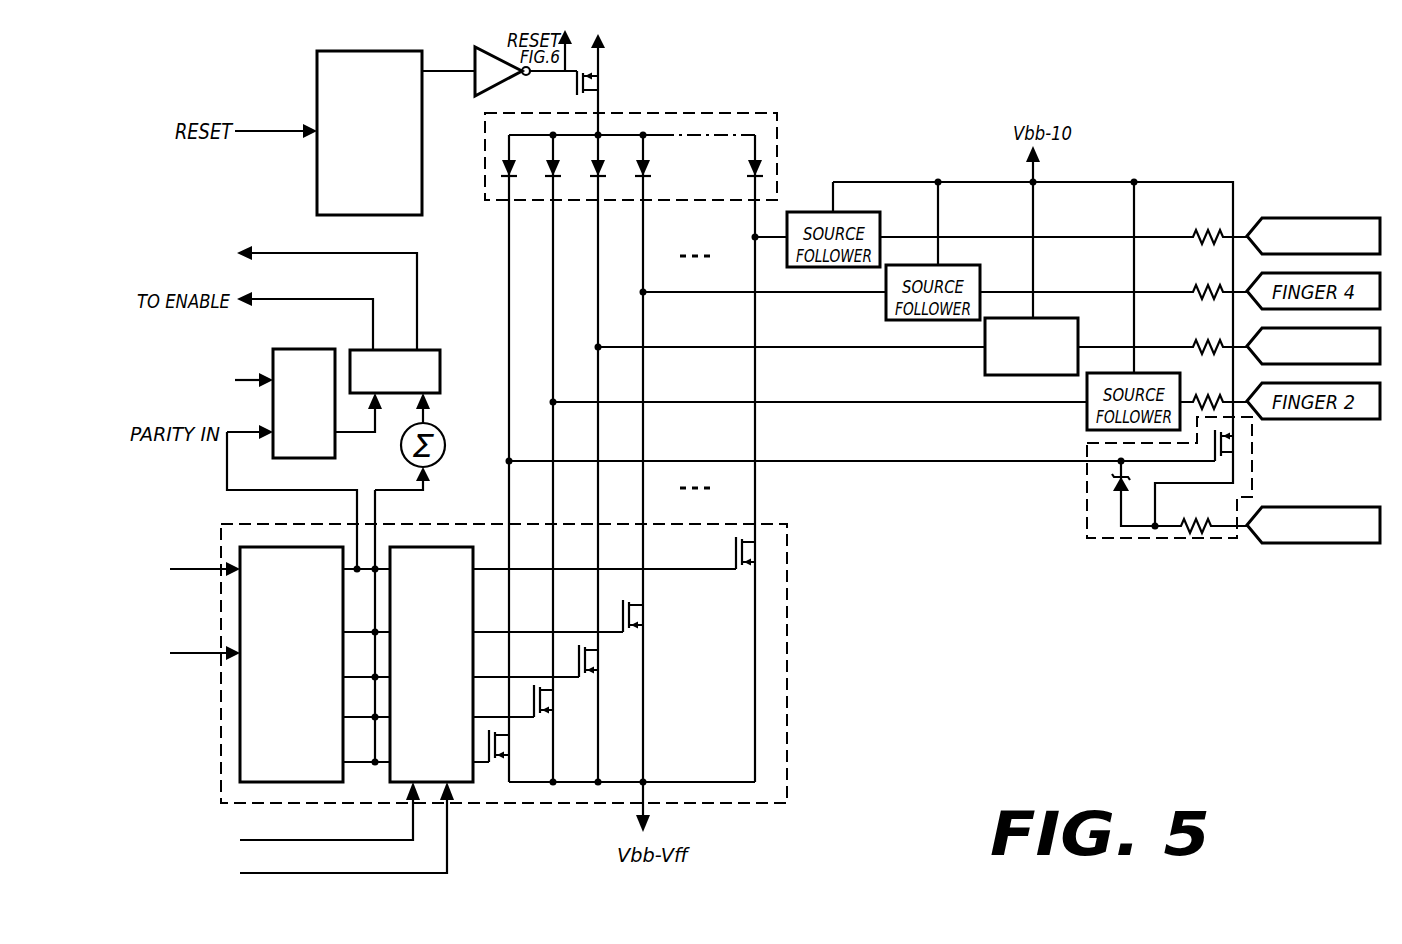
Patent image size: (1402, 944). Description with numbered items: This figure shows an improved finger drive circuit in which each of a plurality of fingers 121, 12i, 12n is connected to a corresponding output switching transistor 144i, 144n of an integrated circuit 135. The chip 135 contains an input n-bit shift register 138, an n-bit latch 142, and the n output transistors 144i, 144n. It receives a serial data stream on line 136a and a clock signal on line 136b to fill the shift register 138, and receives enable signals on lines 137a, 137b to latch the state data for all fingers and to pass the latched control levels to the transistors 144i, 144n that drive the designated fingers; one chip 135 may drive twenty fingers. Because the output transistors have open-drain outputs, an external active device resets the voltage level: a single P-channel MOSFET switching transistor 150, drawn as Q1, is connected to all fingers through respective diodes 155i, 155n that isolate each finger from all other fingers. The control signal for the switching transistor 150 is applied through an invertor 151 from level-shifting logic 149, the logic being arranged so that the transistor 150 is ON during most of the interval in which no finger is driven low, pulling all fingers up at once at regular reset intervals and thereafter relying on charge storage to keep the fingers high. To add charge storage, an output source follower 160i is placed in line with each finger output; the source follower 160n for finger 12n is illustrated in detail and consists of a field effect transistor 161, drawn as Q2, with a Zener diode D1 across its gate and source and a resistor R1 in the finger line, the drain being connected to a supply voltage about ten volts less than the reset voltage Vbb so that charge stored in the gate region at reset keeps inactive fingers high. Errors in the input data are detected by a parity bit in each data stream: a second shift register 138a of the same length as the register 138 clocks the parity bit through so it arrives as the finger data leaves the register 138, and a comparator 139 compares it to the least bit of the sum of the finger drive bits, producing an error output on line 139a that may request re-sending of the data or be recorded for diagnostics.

The level-shifting logic 149 is at (386, 172).
The invertor 151 is at (498, 78).
The switching transistor 150 is at (622, 83).
The reset transistor Q1 is at (601, 88).
The diode 155n is at (502, 178).
The diode 155i is at (610, 180).
The error output line 139a is at (418, 280).
The comparator 139 is at (425, 350).
The second shift register 138a is at (322, 414).
The clock signal line 136b is at (245, 378).
The serial data line 136a is at (190, 566).
The n-bit shift register 138 is at (305, 604).
The n-bit latch 142 is at (442, 604).
The integrated circuit 135 is at (690, 557).
The output switching transistor 144i is at (612, 661).
The output switching transistor 144n is at (503, 768).
The enable signal line 137a is at (332, 838).
The enable signal line 137b is at (332, 871).
The finger 121 is at (1300, 218).
The finger 12i is at (1250, 338).
The finger 12n is at (1295, 507).
The output source follower 160i is at (985, 352).
The output source follower 160n is at (1198, 499).
The field effect transistor 161 is at (1231, 479).
The source follower transistor Q2 is at (1233, 437).
The protection diode D1 is at (1132, 484).
The finger resistor R1 is at (1063, 372).